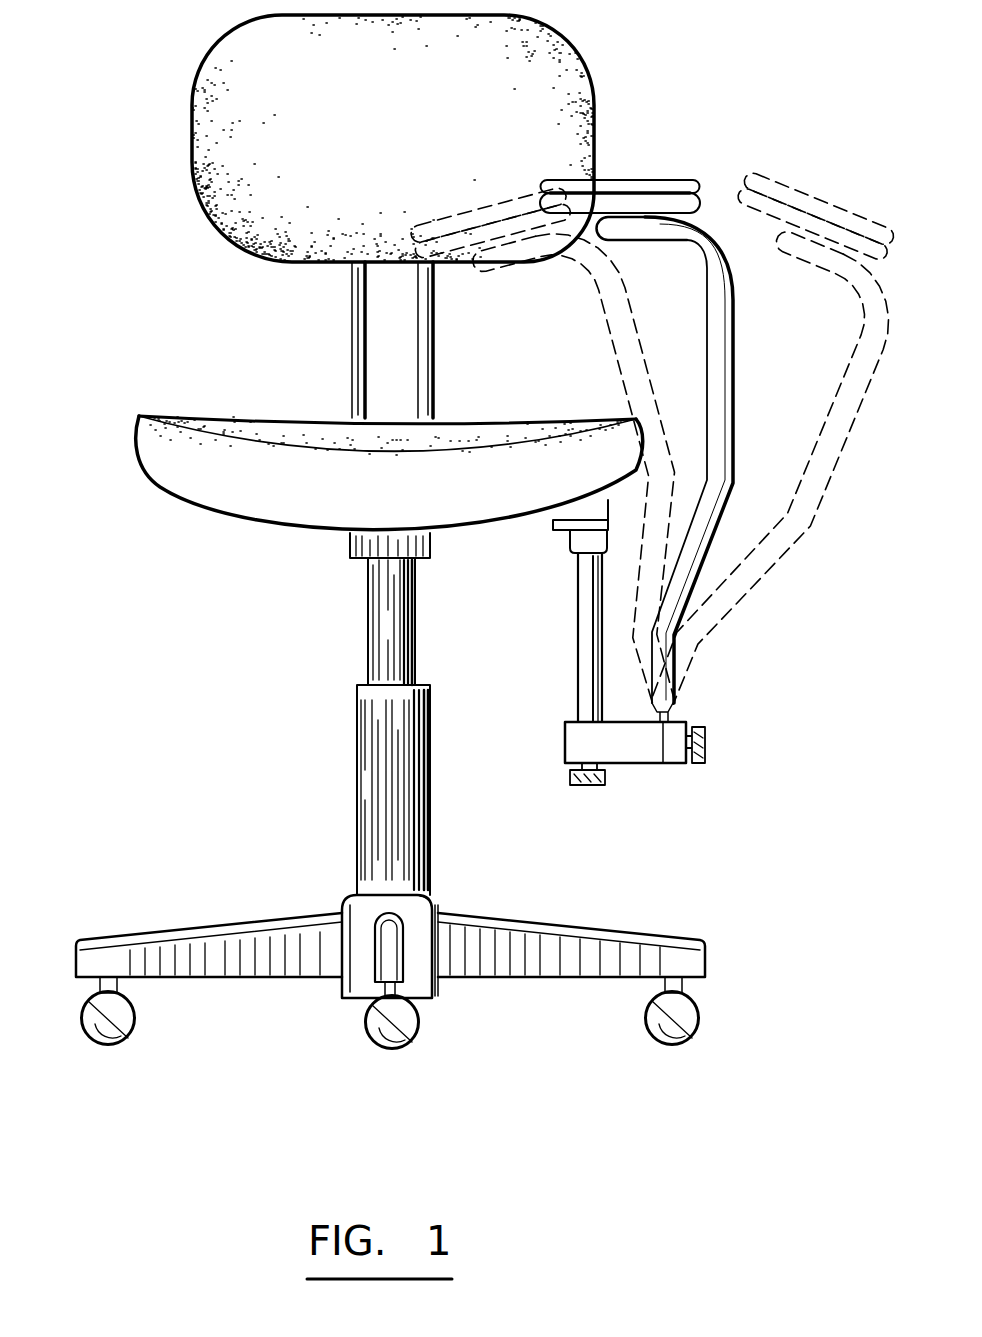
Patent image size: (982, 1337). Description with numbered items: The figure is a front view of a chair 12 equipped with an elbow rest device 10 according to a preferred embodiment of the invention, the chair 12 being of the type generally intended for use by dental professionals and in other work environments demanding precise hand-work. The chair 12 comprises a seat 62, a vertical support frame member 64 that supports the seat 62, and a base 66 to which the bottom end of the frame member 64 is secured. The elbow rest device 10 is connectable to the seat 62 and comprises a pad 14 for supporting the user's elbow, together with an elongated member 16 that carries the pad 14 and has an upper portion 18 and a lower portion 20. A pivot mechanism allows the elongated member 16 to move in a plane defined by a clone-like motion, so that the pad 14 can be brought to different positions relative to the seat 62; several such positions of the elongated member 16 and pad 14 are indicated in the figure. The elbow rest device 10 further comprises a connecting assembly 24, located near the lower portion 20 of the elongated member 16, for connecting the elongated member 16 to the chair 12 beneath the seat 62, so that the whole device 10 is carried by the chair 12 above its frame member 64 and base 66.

The elbow rest device 10 is at (652, 394).
The chair 12 is at (148, 268).
The pad 14 is at (648, 185).
The elongated member 16 is at (733, 438).
The upper portion 18 is at (662, 246).
The lower portion 20 is at (694, 680).
The connecting assembly 24 is at (556, 676).
The seat 62 is at (152, 438).
The vertical support frame member 64 is at (350, 356).
The base 66 is at (316, 805).